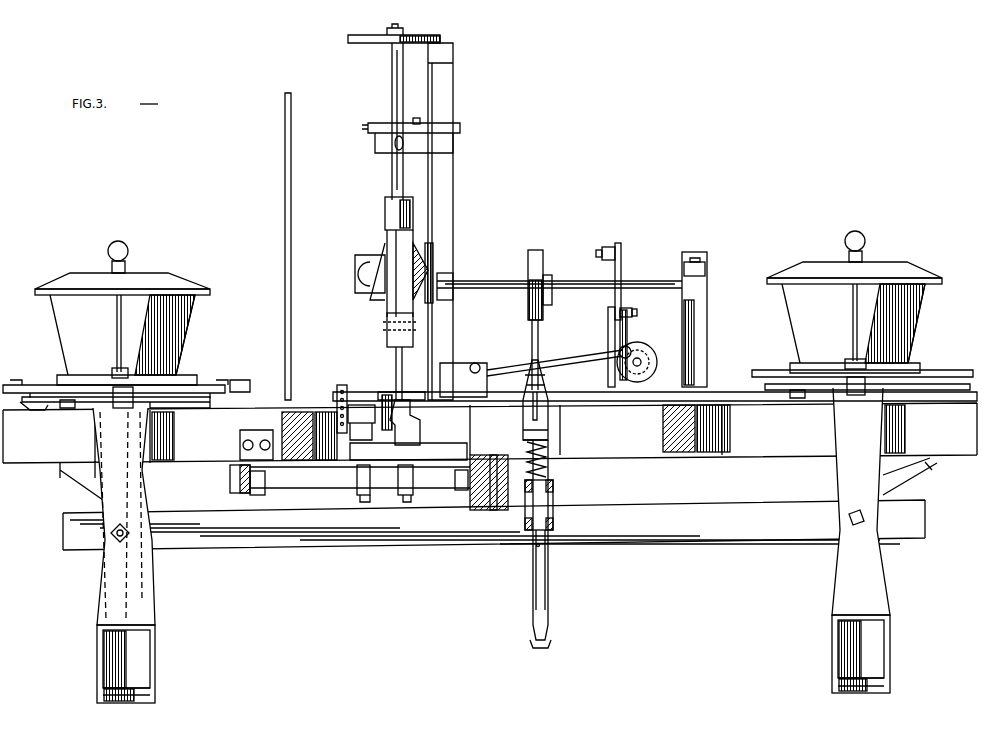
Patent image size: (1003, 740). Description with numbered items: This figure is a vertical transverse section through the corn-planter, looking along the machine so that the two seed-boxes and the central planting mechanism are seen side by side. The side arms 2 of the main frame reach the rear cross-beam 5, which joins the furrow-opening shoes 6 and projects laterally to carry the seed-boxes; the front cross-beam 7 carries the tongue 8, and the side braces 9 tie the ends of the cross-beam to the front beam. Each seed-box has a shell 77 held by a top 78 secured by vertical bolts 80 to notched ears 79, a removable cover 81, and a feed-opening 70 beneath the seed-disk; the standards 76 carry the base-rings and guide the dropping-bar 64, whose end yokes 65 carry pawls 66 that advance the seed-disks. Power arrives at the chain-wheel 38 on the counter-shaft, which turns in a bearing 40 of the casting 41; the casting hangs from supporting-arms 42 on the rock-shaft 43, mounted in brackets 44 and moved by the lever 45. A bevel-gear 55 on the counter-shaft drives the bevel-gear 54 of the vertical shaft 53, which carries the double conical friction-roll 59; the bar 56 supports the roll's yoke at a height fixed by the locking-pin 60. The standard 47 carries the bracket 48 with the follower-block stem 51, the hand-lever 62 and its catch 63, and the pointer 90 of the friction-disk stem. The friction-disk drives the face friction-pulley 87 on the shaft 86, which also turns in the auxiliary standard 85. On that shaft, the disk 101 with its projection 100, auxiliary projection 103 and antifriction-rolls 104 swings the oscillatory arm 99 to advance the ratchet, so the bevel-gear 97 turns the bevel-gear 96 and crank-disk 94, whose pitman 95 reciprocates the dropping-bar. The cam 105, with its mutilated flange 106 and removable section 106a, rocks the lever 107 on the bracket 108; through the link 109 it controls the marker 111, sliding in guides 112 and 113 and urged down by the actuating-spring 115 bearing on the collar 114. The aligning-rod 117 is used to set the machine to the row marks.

The side arms 2 is at (672, 465).
The cross-beam 5 is at (68, 483).
The furrow-opening shoes 6 is at (491, 545).
The front cross-beam 7 is at (215, 555).
The tongue 8 is at (493, 510).
The side braces 9 is at (910, 476).
The chain-wheel 38 is at (340, 385).
The bearing 40 is at (364, 405).
The casting 41 is at (408, 451).
The supporting-arms 42 is at (370, 495).
The rock-shaft 43 is at (297, 487).
The brackets 44 is at (455, 500).
The lever 45 is at (229, 489).
The standard 47 is at (455, 178).
The bracket 48 is at (408, 178).
The stem 51 is at (391, 142).
The shaft 53 is at (410, 365).
The bevel-gear 54 is at (416, 392).
The bevel-gear 55 is at (401, 420).
The bar 56 is at (393, 238).
The double conical friction-roll 59 is at (383, 290).
The locking-pin 60 is at (386, 328).
The hand-lever 62 is at (460, 128).
The stop or catch 63 is at (417, 118).
The dropping-bar 64 is at (270, 393).
The yoke 65 is at (795, 392).
The pawls 66 is at (928, 392).
The feed-opening 70 is at (195, 315).
The standards 76 is at (124, 400).
The shell 77 is at (58, 310).
The top 78 is at (62, 283).
The notched ears 79 is at (124, 370).
The vertical bolts 80 is at (116, 328).
The removable cover 81 is at (108, 270).
The auxiliary standard 85 is at (708, 330).
The shaft 86 is at (497, 283).
The face friction-pulley 87 is at (433, 255).
The pointer 90 is at (405, 25).
The crank-disk 94 is at (655, 355).
The pitman 95 is at (562, 360).
The bevel-gear 96 is at (657, 365).
The bevel-gear 97 is at (632, 340).
The oscillatory arm 99 is at (608, 325).
The projection 100 is at (597, 262).
The disk 101 is at (622, 252).
The auxiliary projection 103 is at (640, 314).
The antifriction-rolls 104 is at (634, 305).
The cam 105 is at (545, 262).
The mutilated flange 106 is at (530, 300).
The removable section 106a is at (530, 258).
The rocking lever 107 is at (530, 333).
The bracket 108 is at (552, 372).
The link 109 is at (545, 420).
The marker 111 is at (558, 566).
The guide 112 is at (548, 433).
The guide 113 is at (555, 498).
The collar 114 is at (555, 483).
The actuating-spring 115 is at (548, 468).
The aligning-rod 117 is at (285, 190).